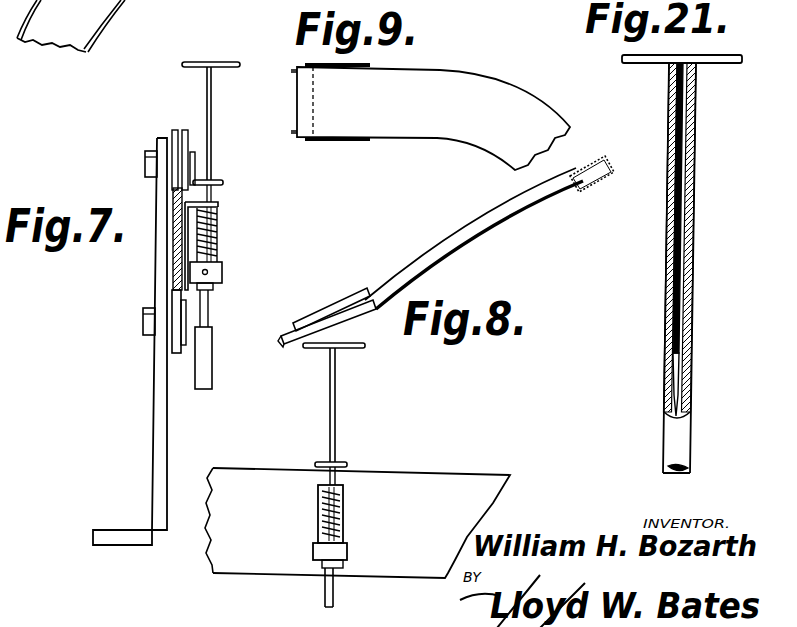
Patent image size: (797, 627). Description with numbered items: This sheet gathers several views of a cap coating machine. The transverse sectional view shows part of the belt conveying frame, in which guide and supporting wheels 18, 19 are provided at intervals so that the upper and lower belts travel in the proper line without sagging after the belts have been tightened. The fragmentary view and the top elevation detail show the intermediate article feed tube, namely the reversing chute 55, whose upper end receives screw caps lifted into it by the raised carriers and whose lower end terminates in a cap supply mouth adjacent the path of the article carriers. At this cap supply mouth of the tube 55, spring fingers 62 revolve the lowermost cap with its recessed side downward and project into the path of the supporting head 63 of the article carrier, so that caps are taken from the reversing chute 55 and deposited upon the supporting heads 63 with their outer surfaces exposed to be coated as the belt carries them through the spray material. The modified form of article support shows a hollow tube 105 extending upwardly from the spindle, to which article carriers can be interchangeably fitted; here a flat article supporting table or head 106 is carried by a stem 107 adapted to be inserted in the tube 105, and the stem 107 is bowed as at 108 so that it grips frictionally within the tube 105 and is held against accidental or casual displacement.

In FIG. 7, the guide and supporting wheel 18 is at (183, 132).
In FIG. 7, the guide and supporting wheel 19 is at (173, 352).
In FIG. 8, the reversing chute 55 is at (488, 213).
In FIG. 8, the spring fingers 62 is at (344, 298).
In FIG. 8, the supporting head 63 is at (357, 346).
In FIG. 21, the hollow tube 105 is at (693, 218).
In FIG. 21, the article supporting table or head 106 is at (697, 112).
In FIG. 21, the stem 107 is at (677, 100).
In FIG. 21, the bow 108 is at (680, 373).